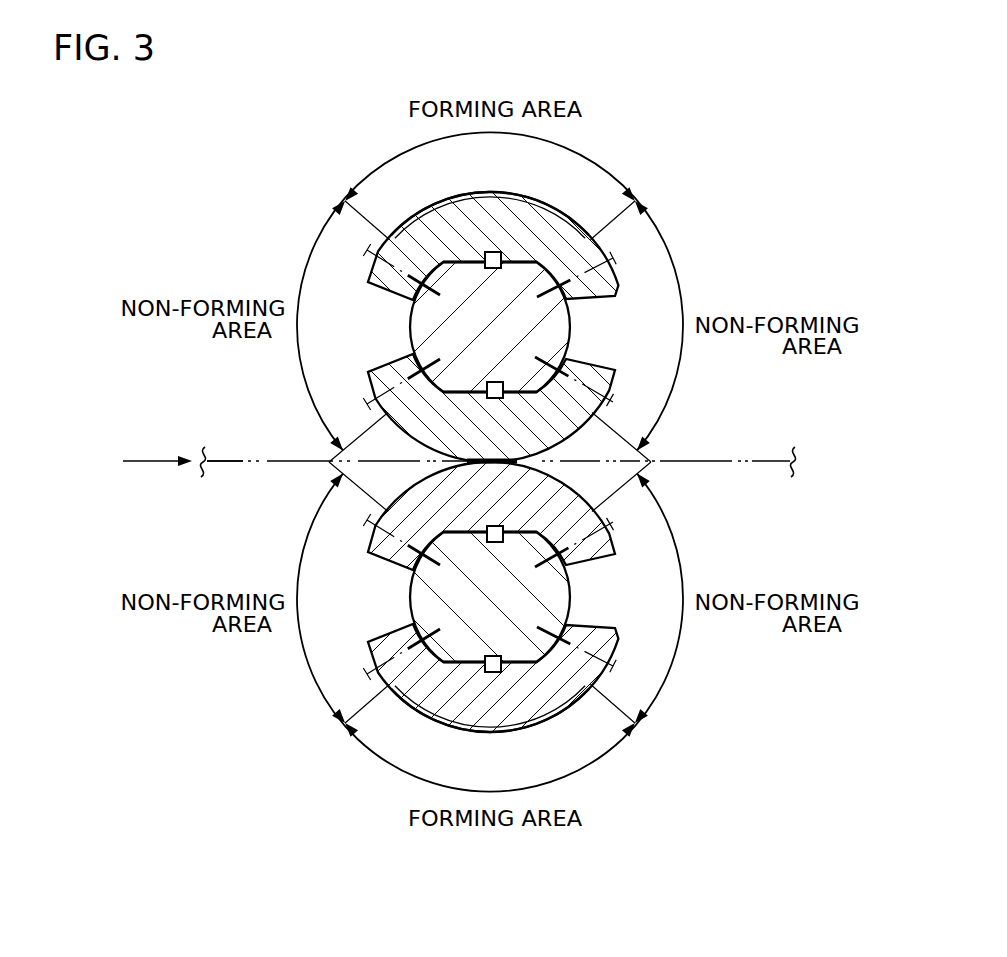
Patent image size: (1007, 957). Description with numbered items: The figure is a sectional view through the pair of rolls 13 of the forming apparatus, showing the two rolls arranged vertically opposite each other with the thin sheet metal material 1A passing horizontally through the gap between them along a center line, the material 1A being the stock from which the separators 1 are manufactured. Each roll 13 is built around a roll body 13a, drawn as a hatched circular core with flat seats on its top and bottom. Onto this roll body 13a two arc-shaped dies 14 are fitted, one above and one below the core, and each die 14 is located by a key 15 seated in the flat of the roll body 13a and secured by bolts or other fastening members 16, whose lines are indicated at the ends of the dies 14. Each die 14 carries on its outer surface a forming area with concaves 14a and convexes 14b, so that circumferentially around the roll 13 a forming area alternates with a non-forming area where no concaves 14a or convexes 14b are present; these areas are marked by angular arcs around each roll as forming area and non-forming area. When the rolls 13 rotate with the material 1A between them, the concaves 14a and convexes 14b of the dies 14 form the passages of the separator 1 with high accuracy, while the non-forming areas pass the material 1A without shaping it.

The separator 1 is at (708, 460).
The material 1A is at (232, 457).
The roll 13 is at (578, 334).
The roll body 13a is at (565, 317).
The arc-shaped die 14 is at (422, 215).
The concave 14a is at (540, 198).
The convex 14b is at (470, 193).
The key 15 is at (503, 260).
The fastening member 16 is at (370, 256).